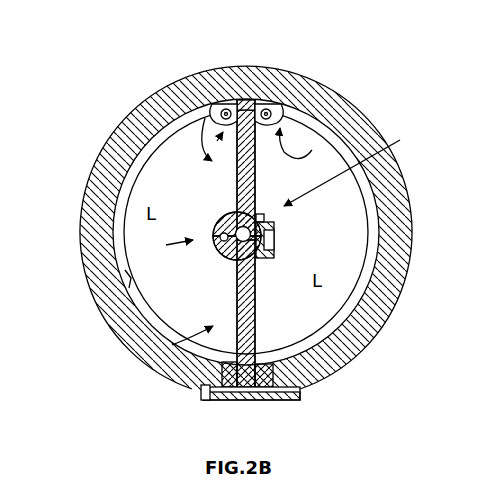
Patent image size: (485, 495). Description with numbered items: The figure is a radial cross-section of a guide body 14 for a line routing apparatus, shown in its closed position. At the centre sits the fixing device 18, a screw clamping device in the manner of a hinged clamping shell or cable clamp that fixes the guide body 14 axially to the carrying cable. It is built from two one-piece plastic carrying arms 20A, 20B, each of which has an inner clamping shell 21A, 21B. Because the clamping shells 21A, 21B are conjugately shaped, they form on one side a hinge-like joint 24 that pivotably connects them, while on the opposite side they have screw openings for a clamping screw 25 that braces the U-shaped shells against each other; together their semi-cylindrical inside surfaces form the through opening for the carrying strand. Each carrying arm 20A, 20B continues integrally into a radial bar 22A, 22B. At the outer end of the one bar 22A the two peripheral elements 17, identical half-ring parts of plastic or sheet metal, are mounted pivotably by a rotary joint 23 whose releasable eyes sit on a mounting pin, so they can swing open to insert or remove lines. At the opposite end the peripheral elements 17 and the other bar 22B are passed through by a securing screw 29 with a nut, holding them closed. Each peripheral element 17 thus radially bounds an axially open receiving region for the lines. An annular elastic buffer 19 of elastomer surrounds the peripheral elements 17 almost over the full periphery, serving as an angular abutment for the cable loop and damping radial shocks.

The guide body 14 is at (394, 92).
The peripheral elements 17 is at (125, 270).
The fixing device 18 is at (355, 164).
The elastic buffer 19 is at (411, 222).
The carrying arm 20A is at (160, 123).
The carrying arm 20B is at (200, 345).
The clamping shell 21A is at (229, 216).
The clamping shell 21B is at (229, 260).
The radial bar 22A is at (257, 165).
The radial bar 22B is at (256, 314).
The rotary joint 23 is at (212, 150).
The hinge-like joint 24 is at (165, 249).
The clamping screw 25 is at (275, 233).
The securing screw 29 is at (300, 393).